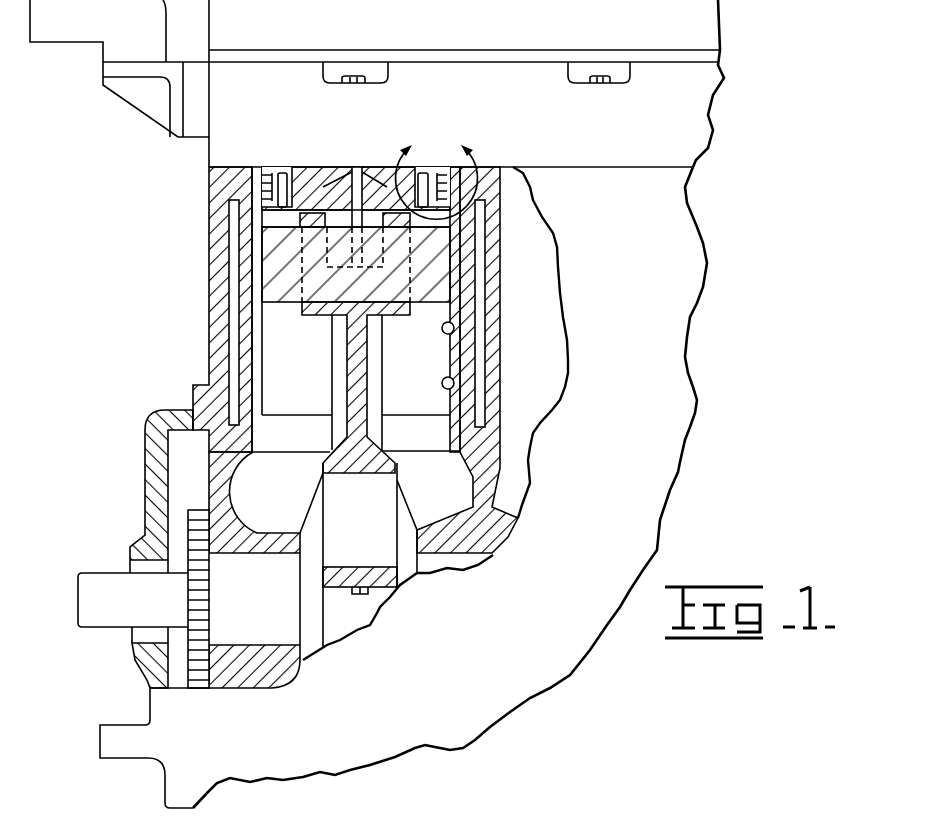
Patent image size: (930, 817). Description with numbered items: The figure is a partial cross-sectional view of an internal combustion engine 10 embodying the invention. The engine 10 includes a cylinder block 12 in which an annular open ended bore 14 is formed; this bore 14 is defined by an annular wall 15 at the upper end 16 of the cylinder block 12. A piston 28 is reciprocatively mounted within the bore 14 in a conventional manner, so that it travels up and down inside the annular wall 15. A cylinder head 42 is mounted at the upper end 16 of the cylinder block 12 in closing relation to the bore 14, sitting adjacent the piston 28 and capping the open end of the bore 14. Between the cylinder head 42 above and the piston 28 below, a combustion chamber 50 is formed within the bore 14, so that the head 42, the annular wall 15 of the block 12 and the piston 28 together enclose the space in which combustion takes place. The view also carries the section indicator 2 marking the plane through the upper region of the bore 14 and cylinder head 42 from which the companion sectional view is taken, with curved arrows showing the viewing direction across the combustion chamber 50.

The internal combustion engine 10 is at (280, 424).
The cylinder block 12 is at (163, 792).
The bore 14 is at (450, 396).
The annular wall 15 is at (454, 328).
The upper end 16 is at (188, 247).
The piston 28 is at (287, 268).
The cylinder head 42 is at (237, 110).
The combustion chamber 50 is at (297, 185).
The section line 2- 2 is at (436, 171).